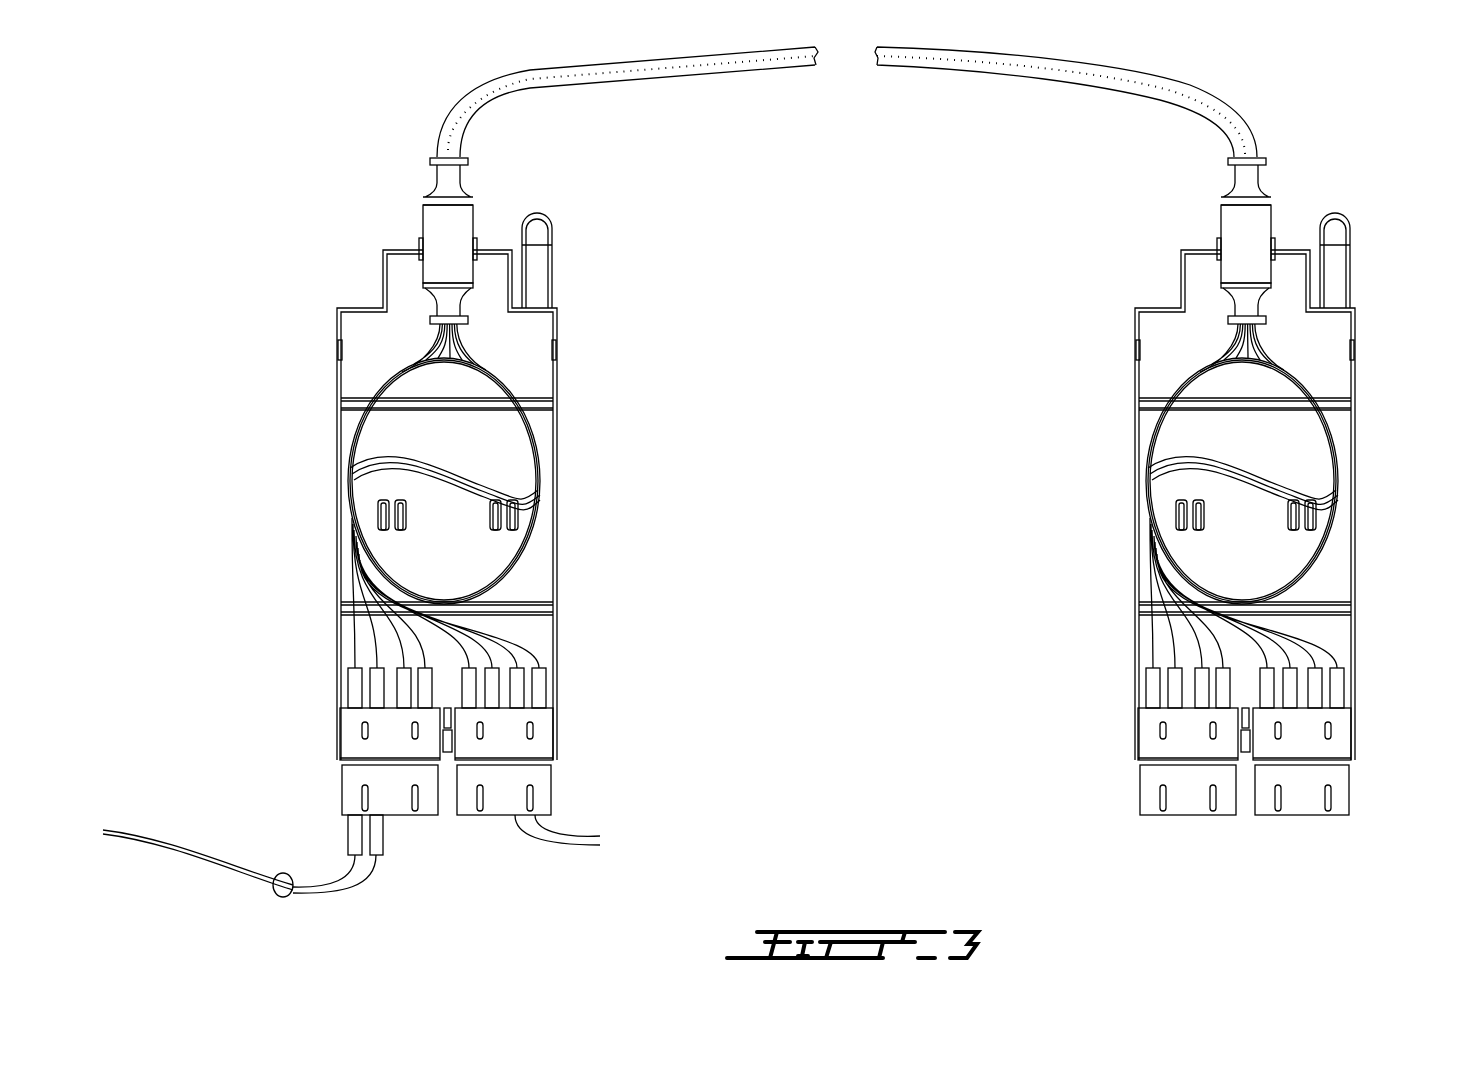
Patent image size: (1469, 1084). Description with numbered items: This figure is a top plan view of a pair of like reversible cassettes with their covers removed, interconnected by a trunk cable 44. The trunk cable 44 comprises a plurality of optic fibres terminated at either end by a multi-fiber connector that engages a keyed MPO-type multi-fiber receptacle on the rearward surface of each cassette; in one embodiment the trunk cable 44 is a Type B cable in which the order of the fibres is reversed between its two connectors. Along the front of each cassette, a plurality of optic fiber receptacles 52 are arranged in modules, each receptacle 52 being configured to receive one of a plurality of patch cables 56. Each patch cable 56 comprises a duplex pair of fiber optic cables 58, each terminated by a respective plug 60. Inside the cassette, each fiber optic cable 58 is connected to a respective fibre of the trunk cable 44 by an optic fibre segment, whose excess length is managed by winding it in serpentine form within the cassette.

The trunk cable 44 is at (1220, 92).
The optic fiber receptacles 52 is at (600, 845).
The patch cables 56 is at (296, 893).
The fiber optic cables 58 is at (193, 847).
The plug 60 is at (347, 836).